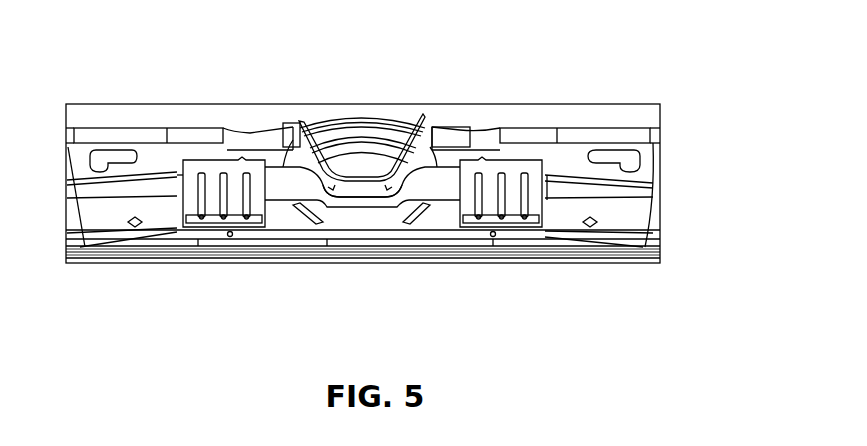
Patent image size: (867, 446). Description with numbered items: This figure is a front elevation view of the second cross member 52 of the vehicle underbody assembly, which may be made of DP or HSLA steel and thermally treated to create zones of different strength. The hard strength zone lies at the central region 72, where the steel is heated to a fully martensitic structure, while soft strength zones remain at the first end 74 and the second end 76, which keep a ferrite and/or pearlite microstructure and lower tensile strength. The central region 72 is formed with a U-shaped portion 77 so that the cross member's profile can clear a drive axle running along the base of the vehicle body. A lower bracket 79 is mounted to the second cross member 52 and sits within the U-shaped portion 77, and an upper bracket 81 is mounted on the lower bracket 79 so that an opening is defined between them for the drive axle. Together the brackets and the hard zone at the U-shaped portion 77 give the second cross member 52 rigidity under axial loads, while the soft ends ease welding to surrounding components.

The second cross member 52 is at (662, 164).
The central region 72 is at (355, 215).
The first end 74 is at (118, 133).
The second end 76 is at (617, 134).
The U-shaped portion 77 is at (397, 206).
The lower bracket 79 is at (300, 118).
The upper bracket 81 is at (328, 117).